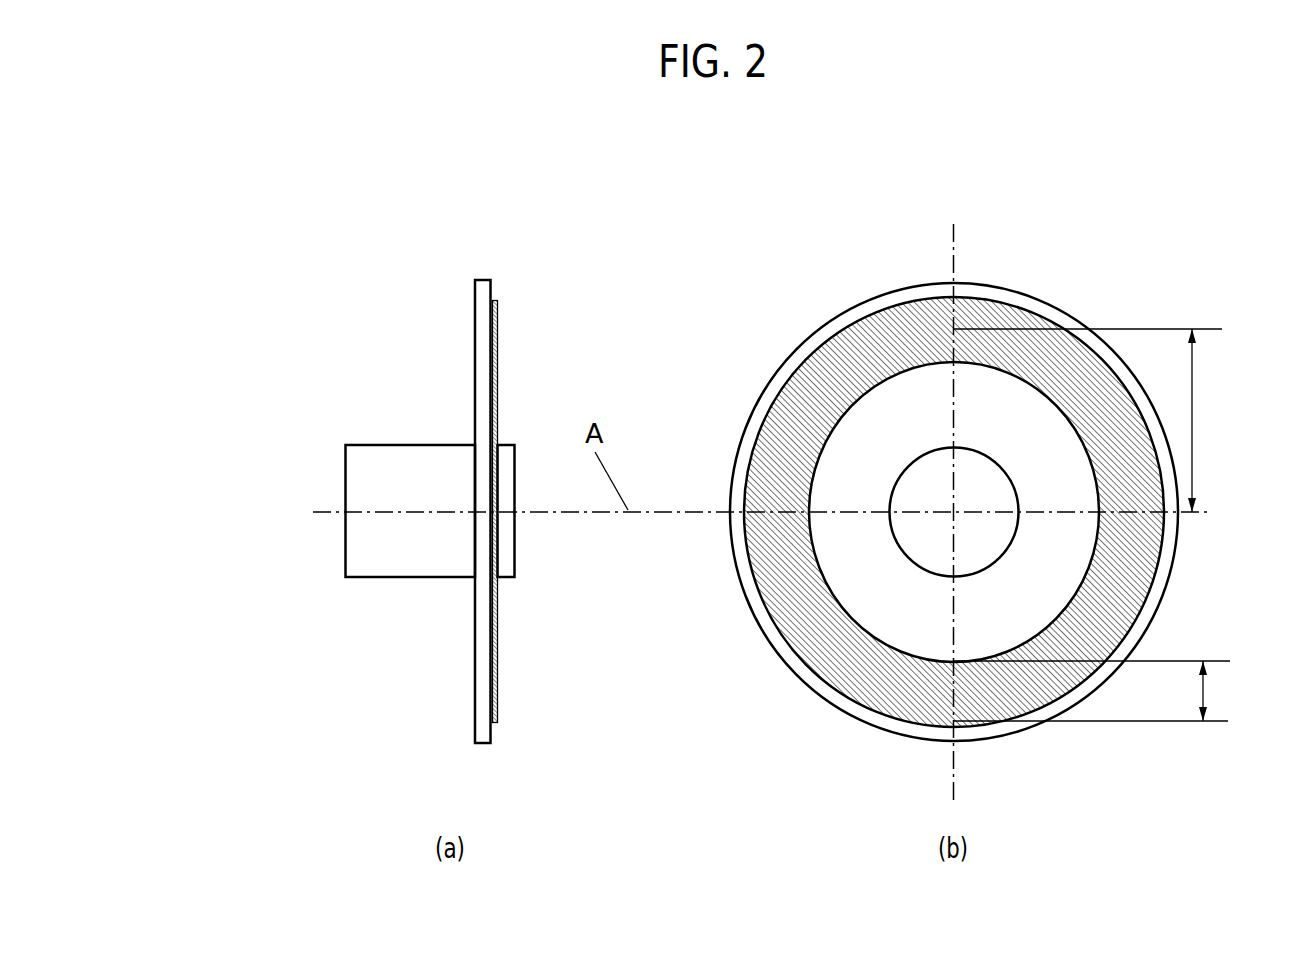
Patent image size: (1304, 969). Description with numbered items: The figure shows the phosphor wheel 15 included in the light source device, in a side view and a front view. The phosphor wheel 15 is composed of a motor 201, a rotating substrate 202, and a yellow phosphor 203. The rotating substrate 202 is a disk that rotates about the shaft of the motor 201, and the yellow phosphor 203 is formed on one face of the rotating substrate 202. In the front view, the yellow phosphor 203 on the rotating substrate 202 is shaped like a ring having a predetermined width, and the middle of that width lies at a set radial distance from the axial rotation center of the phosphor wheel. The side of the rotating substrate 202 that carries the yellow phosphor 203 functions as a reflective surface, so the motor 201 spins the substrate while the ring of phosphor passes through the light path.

The phosphor wheel 15 is at (304, 200).
The motor 201 is at (382, 532).
The rotating substrate 202 is at (482, 332).
The yellow phosphor 203 is at (497, 342).